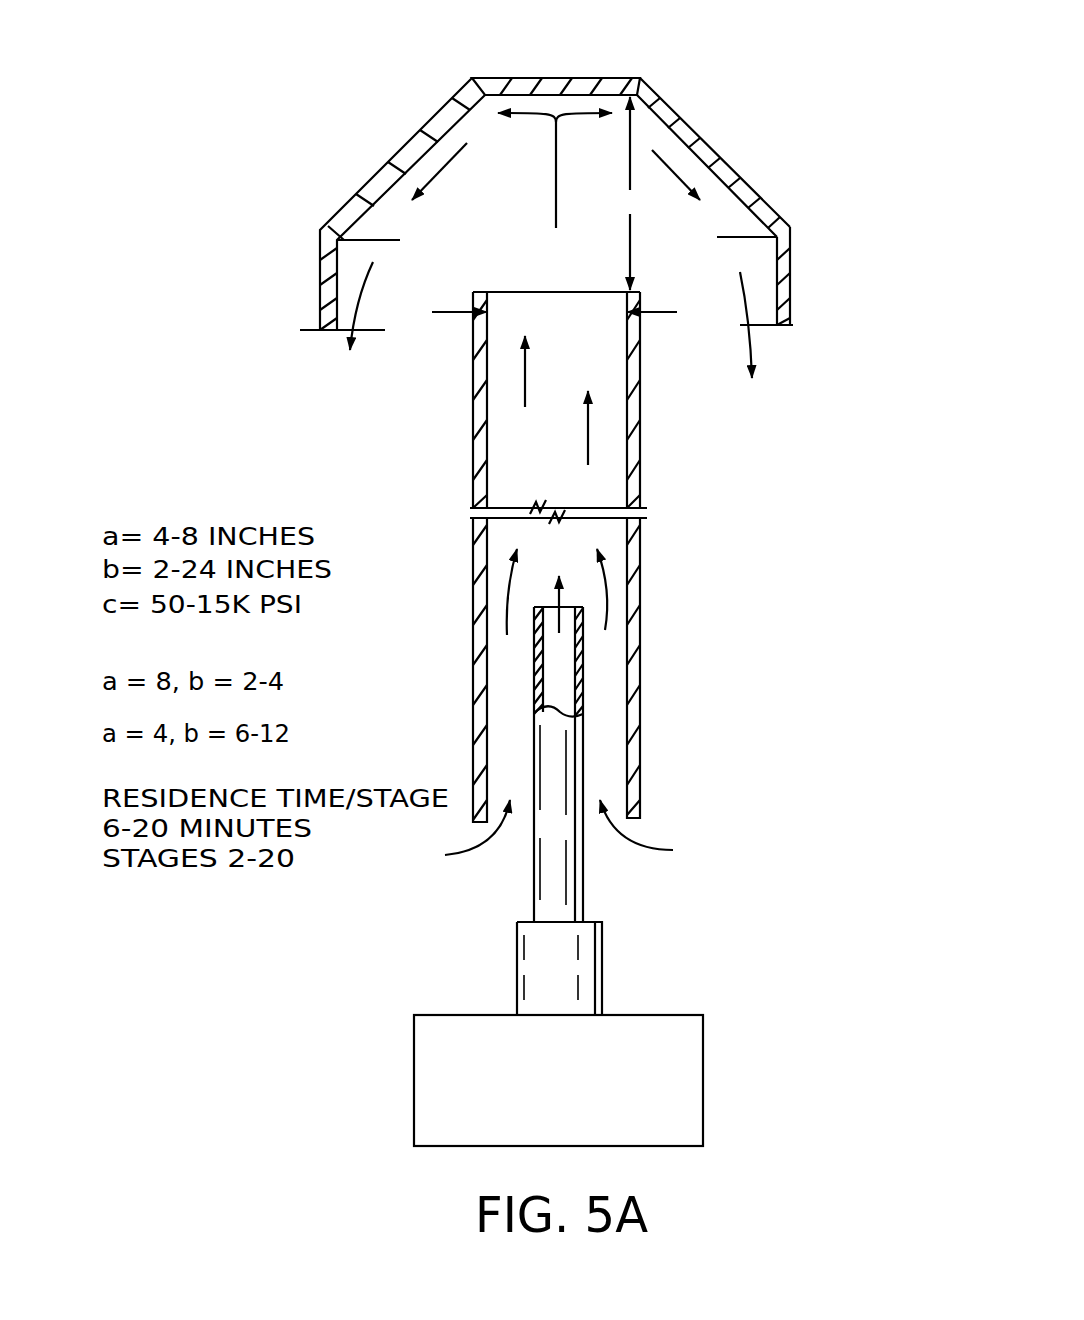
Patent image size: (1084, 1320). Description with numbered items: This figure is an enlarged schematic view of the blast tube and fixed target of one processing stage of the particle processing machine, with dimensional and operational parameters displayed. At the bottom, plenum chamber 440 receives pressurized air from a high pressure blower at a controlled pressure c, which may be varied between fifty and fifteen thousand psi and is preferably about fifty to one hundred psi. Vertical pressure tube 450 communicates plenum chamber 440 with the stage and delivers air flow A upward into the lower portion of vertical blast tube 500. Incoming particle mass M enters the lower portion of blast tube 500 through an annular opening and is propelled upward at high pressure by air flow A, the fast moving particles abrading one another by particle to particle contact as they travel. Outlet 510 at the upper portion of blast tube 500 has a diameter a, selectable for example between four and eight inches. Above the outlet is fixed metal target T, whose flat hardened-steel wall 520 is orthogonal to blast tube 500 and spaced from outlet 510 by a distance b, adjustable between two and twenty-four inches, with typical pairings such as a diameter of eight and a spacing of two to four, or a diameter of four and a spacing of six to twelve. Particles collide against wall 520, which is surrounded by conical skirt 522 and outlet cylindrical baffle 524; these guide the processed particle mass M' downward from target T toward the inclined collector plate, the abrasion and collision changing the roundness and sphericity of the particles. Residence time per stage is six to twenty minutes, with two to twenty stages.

The wall 520 is at (533, 90).
The conical skirt 522 is at (720, 152).
The outlet cylindrical baffle 524 is at (795, 278).
The outlet 510 is at (537, 293).
The blast tube 500 is at (641, 590).
The pressure tube 450 is at (585, 727).
The plenum chamber 440 is at (668, 1013).
The target T is at (602, 74).
The air flow A is at (560, 622).
The particle mass M is at (573, 630).
The processed particle mass M' is at (539, 320).
The diameter a is at (566, 311).
The distance b is at (630, 193).